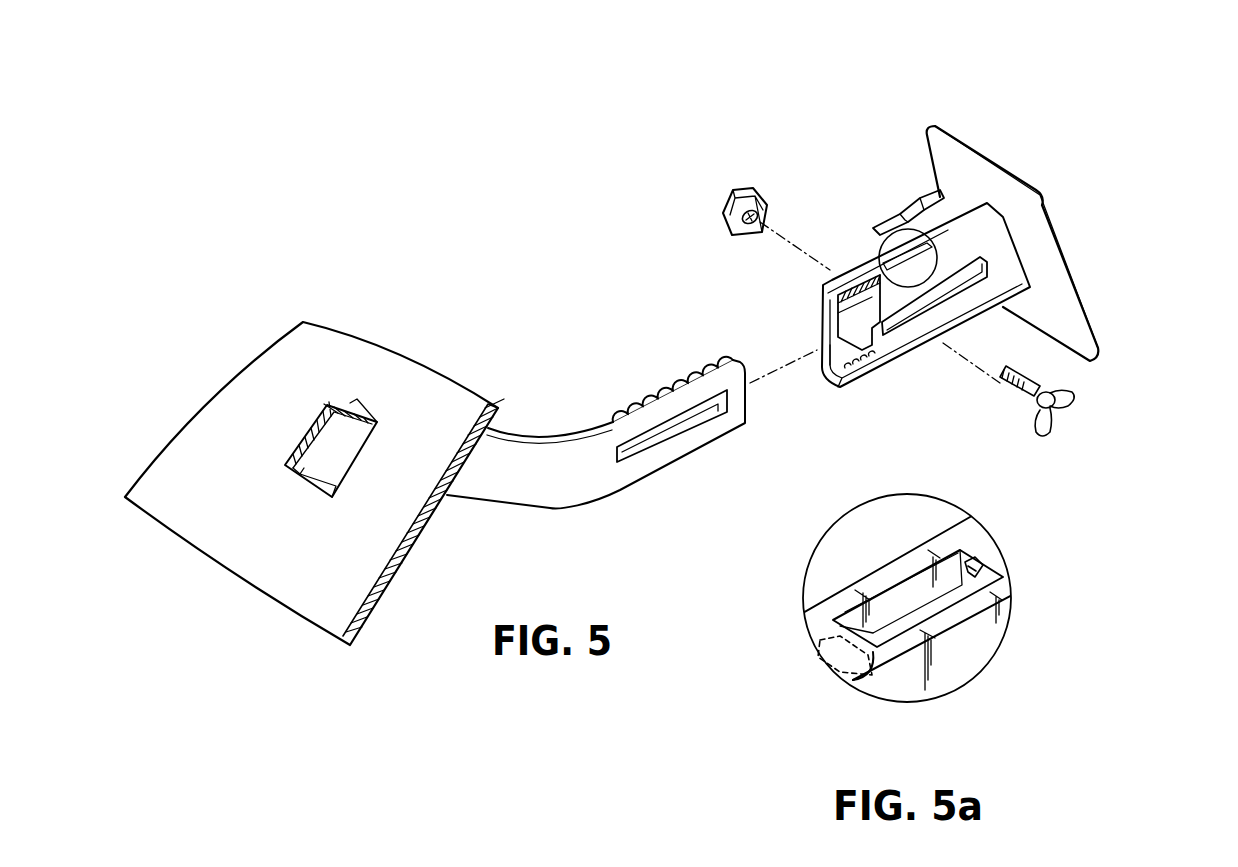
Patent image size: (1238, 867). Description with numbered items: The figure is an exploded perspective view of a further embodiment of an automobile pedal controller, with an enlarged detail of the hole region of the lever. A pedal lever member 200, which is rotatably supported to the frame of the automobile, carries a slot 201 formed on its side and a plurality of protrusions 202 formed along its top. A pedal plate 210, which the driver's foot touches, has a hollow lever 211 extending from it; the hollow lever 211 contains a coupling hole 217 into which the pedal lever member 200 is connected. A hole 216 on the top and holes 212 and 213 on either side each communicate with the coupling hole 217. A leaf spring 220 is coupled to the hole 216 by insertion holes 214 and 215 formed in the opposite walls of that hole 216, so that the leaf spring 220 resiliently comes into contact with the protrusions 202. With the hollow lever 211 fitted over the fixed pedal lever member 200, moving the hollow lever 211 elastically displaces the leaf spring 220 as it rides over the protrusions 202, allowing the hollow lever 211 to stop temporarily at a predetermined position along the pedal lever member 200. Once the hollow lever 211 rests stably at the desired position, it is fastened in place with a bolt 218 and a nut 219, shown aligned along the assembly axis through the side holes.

In FIG. 5, the pedal lever member 200 is at (506, 498).
In FIG. 5, the slot 201 is at (668, 432).
In FIG. 5, the protrusions 202 is at (676, 388).
In FIG. 5, the pedal plate 210 is at (1043, 197).
In FIG. 5, the hollow lever 211 is at (823, 286).
In FIG. 5a, the hollow lever 211 is at (970, 637).
In FIG. 5, the hole 212 is at (938, 290).
In FIG. 5, the hole 213 is at (858, 302).
In FIG. 5a, the insertion hole 214 is at (867, 677).
In FIG. 5a, the insertion hole 215 is at (973, 573).
In FIG. 5a, the hole 216 is at (893, 610).
In FIG. 5, the coupling hole 217 is at (828, 348).
In FIG. 5, the bolt 218 is at (1078, 402).
In FIG. 5, the nut 219 is at (735, 190).
In FIG. 5, the leaf spring 220 is at (885, 218).